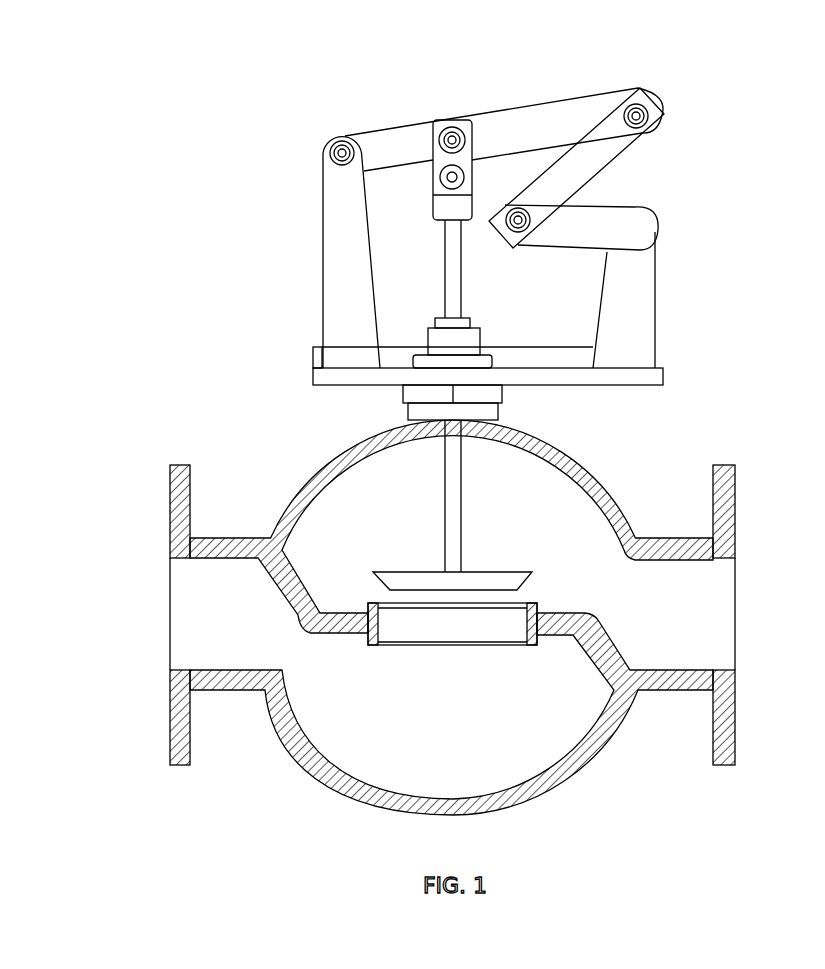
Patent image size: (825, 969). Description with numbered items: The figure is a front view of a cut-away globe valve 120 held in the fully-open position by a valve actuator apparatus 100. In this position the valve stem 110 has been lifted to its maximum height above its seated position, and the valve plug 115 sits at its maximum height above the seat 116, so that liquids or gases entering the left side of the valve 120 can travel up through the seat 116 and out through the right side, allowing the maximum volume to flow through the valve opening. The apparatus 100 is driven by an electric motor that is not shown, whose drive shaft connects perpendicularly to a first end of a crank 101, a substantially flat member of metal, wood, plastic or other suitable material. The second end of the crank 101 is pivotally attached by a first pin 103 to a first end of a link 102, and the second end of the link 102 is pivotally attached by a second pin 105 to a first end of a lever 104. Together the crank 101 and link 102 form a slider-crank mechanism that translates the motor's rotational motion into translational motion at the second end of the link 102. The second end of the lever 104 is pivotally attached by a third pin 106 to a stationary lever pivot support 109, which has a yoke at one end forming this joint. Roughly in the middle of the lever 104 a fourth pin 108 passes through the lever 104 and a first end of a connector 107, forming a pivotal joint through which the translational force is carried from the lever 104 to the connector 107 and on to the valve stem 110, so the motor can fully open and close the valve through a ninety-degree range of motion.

The valve actuator apparatus 100 is at (117, 85).
The crank 101 is at (630, 232).
The link 102 is at (595, 167).
The first pin 103 is at (565, 208).
The lever 104 is at (550, 118).
The second pin 105 is at (648, 108).
The third pin 106 is at (322, 145).
The connector 107 is at (440, 155).
The fourth pin 108 is at (463, 127).
The lever pivot support 109 is at (347, 282).
The valve stem 110 is at (445, 247).
The valve plug 115 is at (407, 572).
The seat 116 is at (528, 610).
The globe valve 120 is at (117, 390).